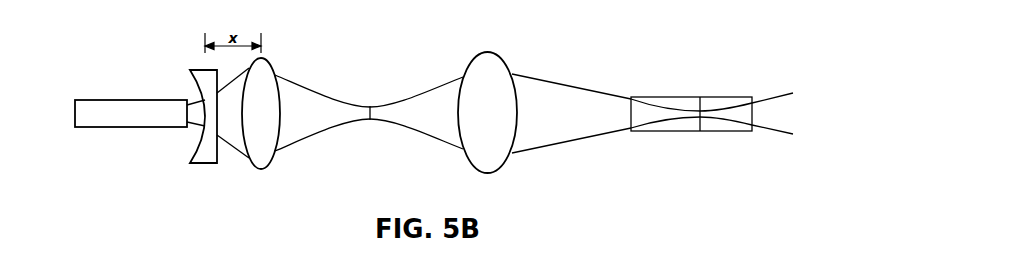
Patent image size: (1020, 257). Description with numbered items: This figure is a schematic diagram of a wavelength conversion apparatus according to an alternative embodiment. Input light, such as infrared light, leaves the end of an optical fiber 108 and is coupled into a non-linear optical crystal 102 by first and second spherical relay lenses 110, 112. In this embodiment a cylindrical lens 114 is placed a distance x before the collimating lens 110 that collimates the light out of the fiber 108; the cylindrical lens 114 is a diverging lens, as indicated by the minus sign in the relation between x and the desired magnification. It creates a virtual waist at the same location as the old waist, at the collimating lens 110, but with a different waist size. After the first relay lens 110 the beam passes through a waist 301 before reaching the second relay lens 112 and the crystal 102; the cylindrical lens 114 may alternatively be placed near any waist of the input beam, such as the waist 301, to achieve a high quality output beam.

The optical fiber 108 is at (142, 111).
The cylindrical lens 114 is at (208, 155).
The first spherical relay lens 110 is at (263, 58).
The waist 301 is at (368, 118).
The second spherical relay lens 112 is at (500, 61).
The non-linear optical crystal 102 is at (713, 125).